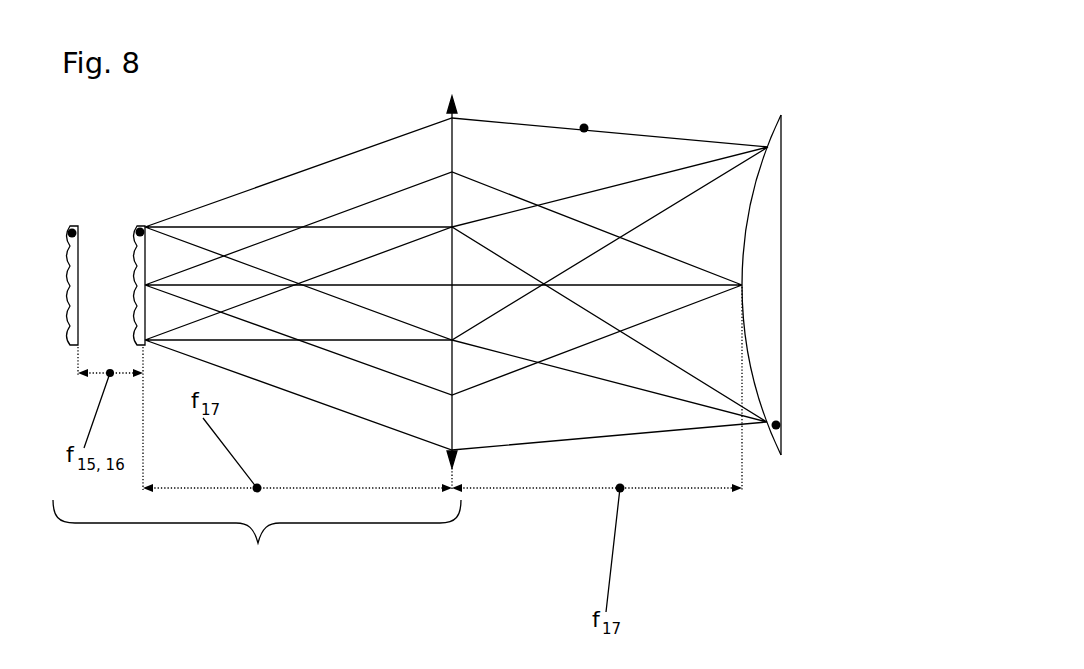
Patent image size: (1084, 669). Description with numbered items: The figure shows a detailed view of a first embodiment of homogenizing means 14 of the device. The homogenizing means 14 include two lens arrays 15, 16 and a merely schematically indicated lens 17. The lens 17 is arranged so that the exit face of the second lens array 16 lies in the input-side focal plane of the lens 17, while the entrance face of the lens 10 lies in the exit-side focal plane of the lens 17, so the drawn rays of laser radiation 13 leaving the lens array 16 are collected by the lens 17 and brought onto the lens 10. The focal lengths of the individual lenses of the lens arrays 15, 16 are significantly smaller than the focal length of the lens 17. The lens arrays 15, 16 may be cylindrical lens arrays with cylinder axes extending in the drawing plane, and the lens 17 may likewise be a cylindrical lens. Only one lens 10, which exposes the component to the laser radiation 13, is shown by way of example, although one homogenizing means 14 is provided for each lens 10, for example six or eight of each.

The lens 10 is at (776, 425).
The laser radiation 13 is at (584, 128).
The homogenizing means 14 is at (257, 542).
The first lens array 15 is at (73, 229).
The second lens array 16 is at (142, 228).
The lens 17 is at (449, 113).